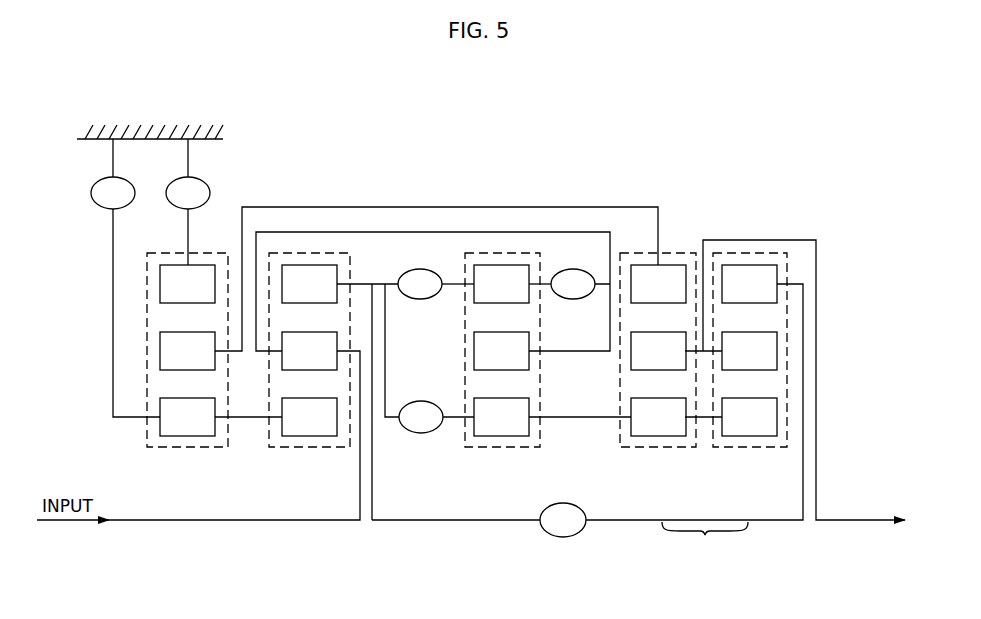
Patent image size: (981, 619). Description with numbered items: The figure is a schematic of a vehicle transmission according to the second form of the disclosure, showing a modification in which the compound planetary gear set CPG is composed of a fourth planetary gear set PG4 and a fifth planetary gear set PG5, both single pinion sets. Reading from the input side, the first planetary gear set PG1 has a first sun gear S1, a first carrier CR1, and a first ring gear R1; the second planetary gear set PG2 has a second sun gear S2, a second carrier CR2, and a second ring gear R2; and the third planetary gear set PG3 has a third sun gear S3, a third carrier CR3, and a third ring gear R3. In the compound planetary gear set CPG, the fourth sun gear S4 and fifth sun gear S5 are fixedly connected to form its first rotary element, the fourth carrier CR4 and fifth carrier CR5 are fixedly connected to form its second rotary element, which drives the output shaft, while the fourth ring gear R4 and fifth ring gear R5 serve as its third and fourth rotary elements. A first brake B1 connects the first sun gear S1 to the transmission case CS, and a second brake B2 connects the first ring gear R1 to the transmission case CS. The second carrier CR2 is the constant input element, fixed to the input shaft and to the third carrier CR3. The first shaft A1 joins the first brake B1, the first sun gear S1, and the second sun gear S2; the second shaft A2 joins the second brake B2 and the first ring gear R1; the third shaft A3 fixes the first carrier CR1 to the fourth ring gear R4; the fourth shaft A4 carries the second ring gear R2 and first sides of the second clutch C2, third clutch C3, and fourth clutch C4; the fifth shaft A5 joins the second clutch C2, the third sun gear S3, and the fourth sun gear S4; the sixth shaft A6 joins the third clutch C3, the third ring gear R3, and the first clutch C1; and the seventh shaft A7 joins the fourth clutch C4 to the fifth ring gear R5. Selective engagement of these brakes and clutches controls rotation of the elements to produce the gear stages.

The transmission case CS is at (163, 128).
The first brake B1 is at (113, 174).
The second brake B2 is at (188, 174).
The first clutch C1 is at (562, 284).
The second clutch C2 is at (421, 417).
The third clutch C3 is at (420, 284).
The fourth clutch C4 is at (587, 410).
The first shaft A1 is at (113, 307).
The second shaft A2 is at (188, 229).
The third shaft A3 is at (313, 207).
The fourth shaft A4 is at (362, 284).
The fifth shaft A5 is at (578, 420).
The sixth shaft A6 is at (447, 297).
The seventh shaft A7 is at (773, 522).
The first planetary gear set PG1 is at (214, 382).
The second planetary gear set PG2 is at (309, 382).
The third planetary gear set PG3 is at (500, 378).
The fourth planetary gear set PG4 is at (658, 382).
The fifth planetary gear set PG5 is at (750, 382).
The compound planetary gear set CPG is at (705, 539).
The first ring gear R1 is at (187, 284).
The second ring gear R2 is at (309, 284).
The third ring gear R3 is at (501, 284).
The fourth ring gear R4 is at (658, 284).
The fifth ring gear R5 is at (749, 284).
The first carrier CR1 is at (187, 351).
The second carrier CR2 is at (309, 351).
The third carrier CR3 is at (501, 351).
The fourth carrier CR4 is at (658, 351).
The fifth carrier CR5 is at (749, 351).
The first sun gear S1 is at (221, 417).
The second sun gear S2 is at (309, 417).
The third sun gear S3 is at (501, 417).
The fourth sun gear S4 is at (658, 417).
The fifth sun gear S5 is at (749, 417).